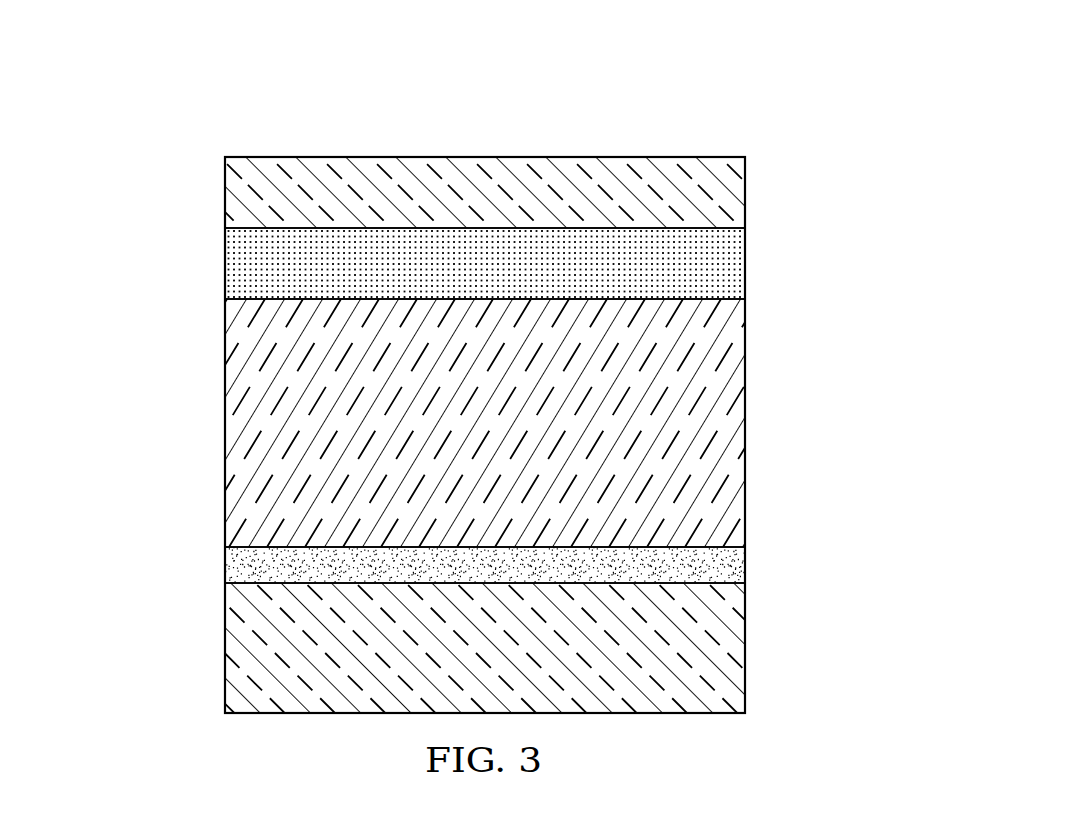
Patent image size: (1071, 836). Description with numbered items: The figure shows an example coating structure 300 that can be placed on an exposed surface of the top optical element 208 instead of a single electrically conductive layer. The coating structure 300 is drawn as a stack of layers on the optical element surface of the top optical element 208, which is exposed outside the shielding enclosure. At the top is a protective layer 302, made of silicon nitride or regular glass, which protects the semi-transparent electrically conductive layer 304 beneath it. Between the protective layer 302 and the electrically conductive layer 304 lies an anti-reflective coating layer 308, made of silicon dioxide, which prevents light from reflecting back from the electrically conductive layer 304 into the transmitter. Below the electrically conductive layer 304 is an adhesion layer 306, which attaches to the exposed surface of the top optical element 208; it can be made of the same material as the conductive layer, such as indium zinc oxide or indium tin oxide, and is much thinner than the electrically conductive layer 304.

The coating structure 300 is at (290, 70).
The protective layer 302 is at (514, 157).
The semi-transparent electrically conductive layer 304 is at (231, 393).
The adhesion layer 306 is at (733, 565).
The anti-reflective coating layer 308 is at (735, 260).
The top optical element 208 is at (232, 670).